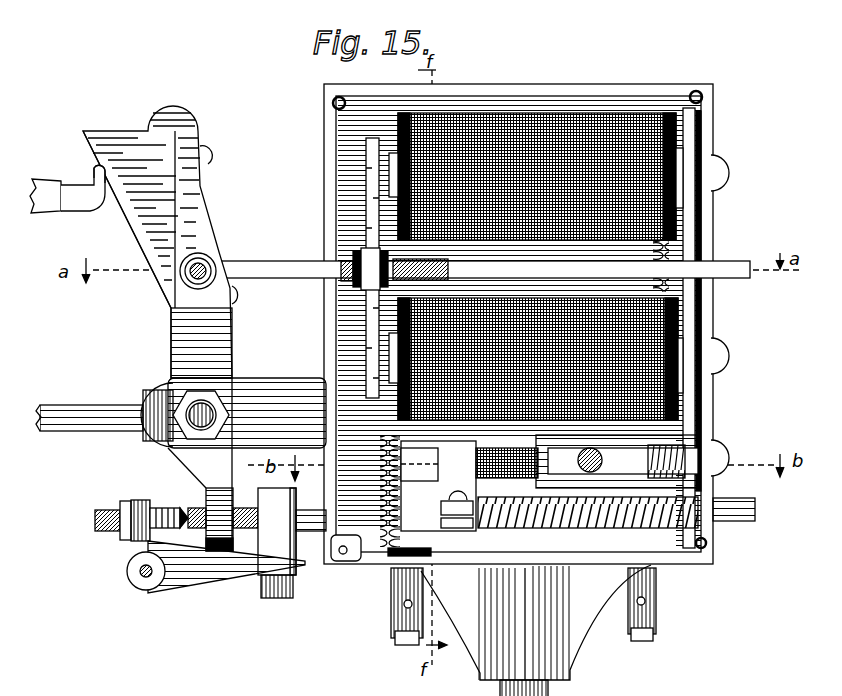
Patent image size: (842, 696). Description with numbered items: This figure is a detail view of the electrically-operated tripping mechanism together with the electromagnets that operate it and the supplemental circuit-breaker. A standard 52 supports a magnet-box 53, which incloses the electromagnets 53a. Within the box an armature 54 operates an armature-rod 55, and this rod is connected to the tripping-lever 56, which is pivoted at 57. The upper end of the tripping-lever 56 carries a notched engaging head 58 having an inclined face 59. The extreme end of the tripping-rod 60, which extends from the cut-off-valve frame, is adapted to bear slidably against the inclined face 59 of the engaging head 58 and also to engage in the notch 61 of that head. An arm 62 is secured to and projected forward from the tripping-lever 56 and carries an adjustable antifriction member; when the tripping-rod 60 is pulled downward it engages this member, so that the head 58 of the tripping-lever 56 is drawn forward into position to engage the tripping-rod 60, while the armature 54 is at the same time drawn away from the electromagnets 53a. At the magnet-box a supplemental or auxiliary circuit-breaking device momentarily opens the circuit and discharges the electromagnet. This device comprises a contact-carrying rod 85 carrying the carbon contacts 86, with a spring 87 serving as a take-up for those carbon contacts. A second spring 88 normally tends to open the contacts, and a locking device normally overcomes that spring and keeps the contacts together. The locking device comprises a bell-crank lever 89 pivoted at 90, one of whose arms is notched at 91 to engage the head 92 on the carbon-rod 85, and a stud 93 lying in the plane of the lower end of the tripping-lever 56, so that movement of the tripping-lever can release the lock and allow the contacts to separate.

The standard 52 is at (540, 676).
The magnet-box 53 is at (538, 78).
The electromagnets 53a is at (618, 112).
The armature 54 is at (326, 202).
The armature-rod 55 is at (278, 270).
The tripping-lever 56 is at (247, 429).
The pivot 57 is at (200, 393).
The engaging head 58 is at (153, 152).
The inclined face 59 is at (122, 222).
The tripping-rod 60 is at (64, 190).
The notch 61 is at (86, 158).
The arm 62 is at (84, 394).
The contact-carrying rod 85 is at (358, 502).
The carbon contacts 86 is at (500, 440).
The spring 87 is at (670, 447).
The spring 88 is at (687, 507).
The bell-crank lever 89 is at (130, 525).
The pivot 90 is at (137, 569).
The notch 91 is at (252, 567).
The head 92 is at (285, 582).
The stud 93 is at (147, 497).